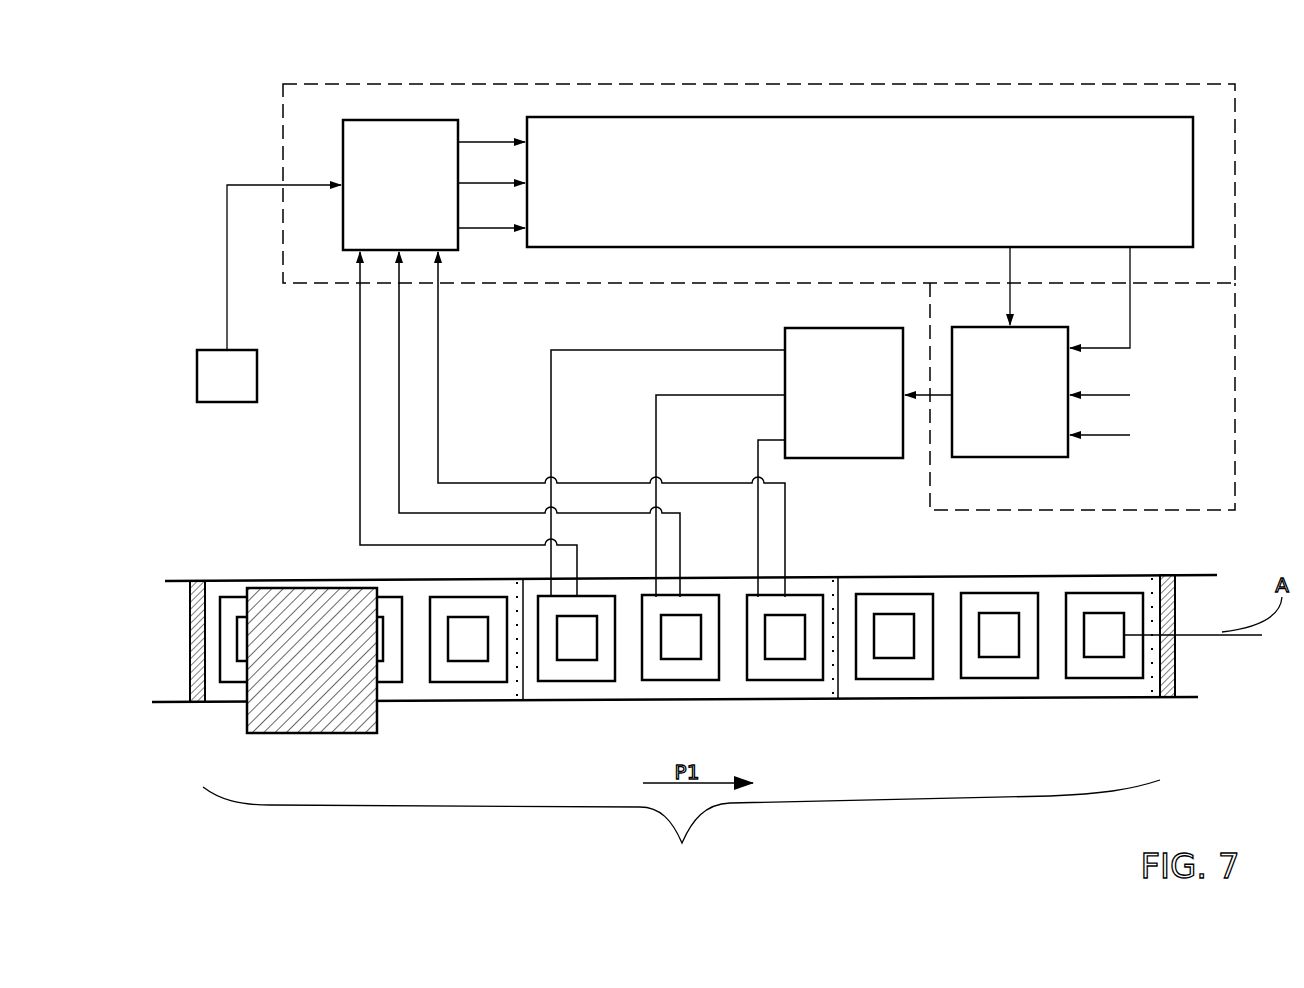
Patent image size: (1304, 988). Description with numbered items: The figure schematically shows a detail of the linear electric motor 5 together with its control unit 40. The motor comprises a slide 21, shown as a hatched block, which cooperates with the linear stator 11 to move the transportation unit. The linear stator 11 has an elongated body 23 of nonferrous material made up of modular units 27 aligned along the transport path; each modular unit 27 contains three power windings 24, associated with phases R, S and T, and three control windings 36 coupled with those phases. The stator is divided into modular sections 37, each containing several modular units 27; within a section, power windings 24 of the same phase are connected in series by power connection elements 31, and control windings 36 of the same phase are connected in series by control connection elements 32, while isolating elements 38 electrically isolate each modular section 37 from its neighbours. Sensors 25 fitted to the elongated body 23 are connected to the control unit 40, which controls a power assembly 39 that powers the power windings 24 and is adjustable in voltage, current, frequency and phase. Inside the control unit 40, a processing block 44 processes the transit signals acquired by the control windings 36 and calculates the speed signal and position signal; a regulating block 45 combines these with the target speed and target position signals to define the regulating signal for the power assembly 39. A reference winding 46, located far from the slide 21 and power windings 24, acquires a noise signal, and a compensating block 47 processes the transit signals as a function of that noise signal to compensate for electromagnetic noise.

The linear electric motor 5 is at (210, 810).
The linear stator 11 is at (545, 742).
The slide 21 is at (332, 748).
The elongated body 23 is at (1060, 705).
The power windings 24 is at (237, 699).
The sensors 25 is at (236, 611).
The modular units 27 is at (313, 563).
The power connection elements 31 is at (192, 612).
The control connection elements 32 is at (197, 582).
The control windings 36 is at (253, 630).
The modular sections 37 is at (187, 758).
The isolating elements 38 is at (188, 663).
The power assembly 39 is at (820, 337).
The control unit 40 is at (249, 94).
The processing block 44 is at (598, 132).
The regulating block 45 is at (1040, 443).
The reference winding 46 is at (213, 380).
The compensating block 47 is at (352, 143).